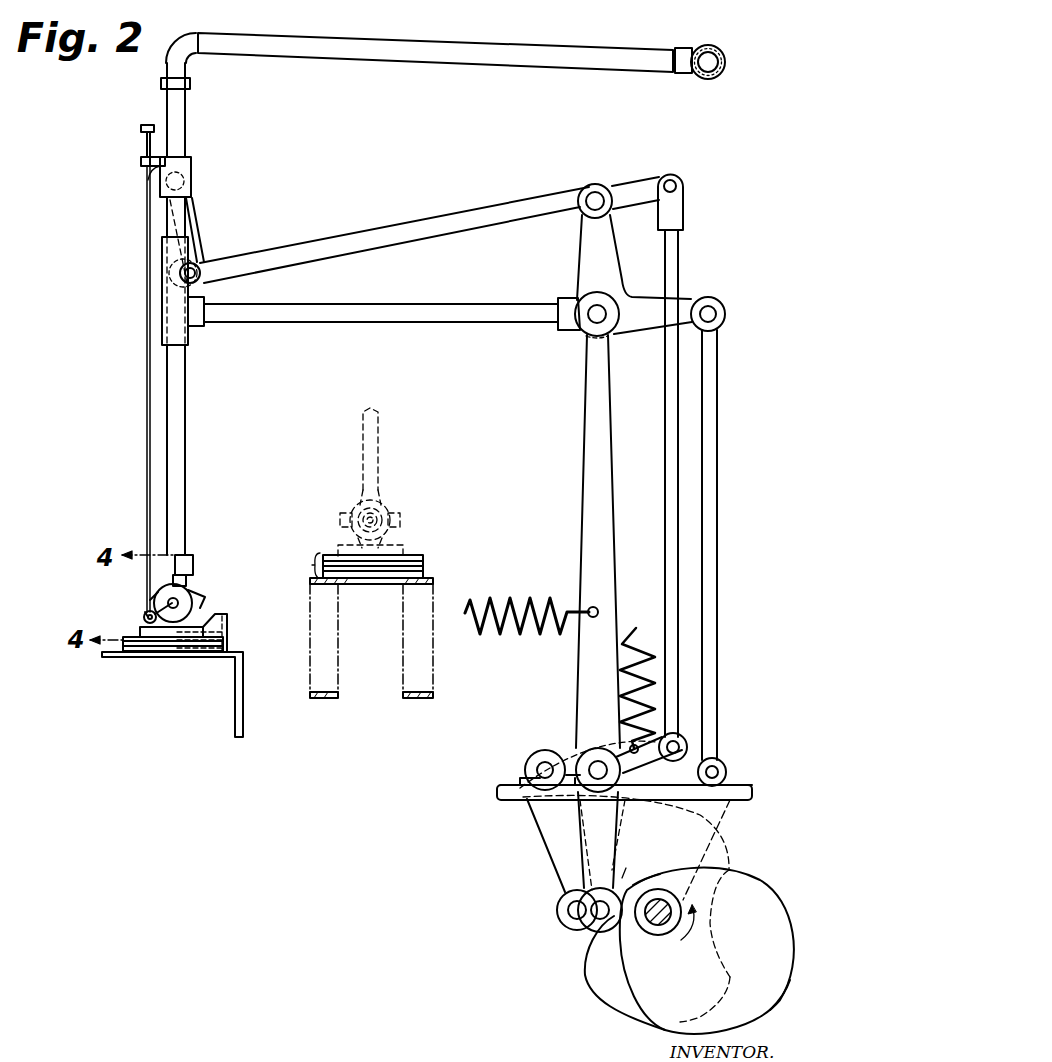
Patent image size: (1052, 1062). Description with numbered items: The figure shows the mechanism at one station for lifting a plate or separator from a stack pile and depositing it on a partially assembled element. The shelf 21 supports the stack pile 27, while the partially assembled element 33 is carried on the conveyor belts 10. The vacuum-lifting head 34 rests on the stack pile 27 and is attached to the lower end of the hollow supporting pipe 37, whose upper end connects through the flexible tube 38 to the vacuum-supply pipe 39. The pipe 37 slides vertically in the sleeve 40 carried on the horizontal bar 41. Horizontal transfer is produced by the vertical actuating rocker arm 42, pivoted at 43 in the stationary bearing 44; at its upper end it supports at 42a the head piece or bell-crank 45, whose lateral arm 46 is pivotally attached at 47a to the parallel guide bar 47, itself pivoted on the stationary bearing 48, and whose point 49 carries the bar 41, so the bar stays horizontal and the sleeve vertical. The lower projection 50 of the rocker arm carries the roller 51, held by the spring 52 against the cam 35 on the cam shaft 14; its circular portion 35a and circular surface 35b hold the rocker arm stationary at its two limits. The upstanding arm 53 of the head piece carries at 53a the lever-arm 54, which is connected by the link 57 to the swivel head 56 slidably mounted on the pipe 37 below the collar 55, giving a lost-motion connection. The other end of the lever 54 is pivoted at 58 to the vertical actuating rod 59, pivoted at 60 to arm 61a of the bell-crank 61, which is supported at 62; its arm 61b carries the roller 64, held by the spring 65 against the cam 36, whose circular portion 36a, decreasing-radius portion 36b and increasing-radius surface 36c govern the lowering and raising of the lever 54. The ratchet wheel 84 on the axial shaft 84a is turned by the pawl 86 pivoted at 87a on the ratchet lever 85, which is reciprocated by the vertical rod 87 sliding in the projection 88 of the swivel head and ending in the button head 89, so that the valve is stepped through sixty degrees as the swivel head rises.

The conveyor belts 10 is at (338, 584).
The cam shaft 14 is at (660, 925).
The shelf 21 is at (103, 655).
The stack pile 27 is at (153, 645).
The partially assembled element 33 is at (351, 565).
The vacuum-lifting head 34 is at (139, 630).
The cam 35 is at (657, 997).
The circular portion of cam 35 35a is at (640, 887).
The circular surface of cam 35 35b is at (759, 997).
The cam 36 is at (595, 1000).
The circular portion of cam 36 36a is at (662, 808).
The portion of cam 36 of decreasing radius 36b is at (742, 874).
The peripheral surface of cam 36 of increasing radius 36c is at (728, 958).
The hollow supporting pipe 37 is at (186, 490).
The flexible tube 38 is at (252, 50).
The vacuum-supply pipe 39 is at (702, 80).
The sleeve 40 is at (189, 338).
The horizontal bar 41 is at (346, 326).
The vertical actuating rocker arm 42 is at (584, 434).
The pivot 42a is at (577, 303).
The pivot 43 is at (601, 769).
The stationary bearing 44 is at (553, 799).
The head piece or bell-crank 45 is at (592, 312).
The lateral projection or arm 46 is at (694, 302).
The parallel guide bar 47 is at (718, 438).
The pivot 47a is at (716, 314).
The stationary bearing 48 is at (718, 771).
The attachment point 49 is at (560, 328).
The lower end or projection of rocker arm 50 is at (615, 872).
The roller 51 is at (592, 922).
The spring 52 is at (495, 600).
The upstanding arm or projection 53 is at (612, 246).
The pivot 53a is at (594, 193).
The lever-arm 54 is at (402, 228).
The collar 55 is at (186, 86).
The swivel head 56 is at (192, 165).
The link 57 is at (197, 226).
The pivot 58 is at (674, 185).
The vertical actuating rod 59 is at (664, 437).
The pivot 60 is at (678, 746).
The bell-crank 61 is at (562, 748).
The arm of bell-crank 61a is at (656, 759).
The arm of bell-crank 61b is at (550, 858).
The pivot 62 is at (541, 770).
The roller 64 is at (560, 919).
The spring 65 is at (633, 632).
The ratchet wheel 84 is at (188, 594).
The axial shaft 84a is at (179, 605).
The ratchet lever 85 is at (162, 613).
The pawl 86 is at (146, 612).
The vertical rod 87 is at (146, 340).
The pivot 87a is at (145, 615).
The projection 88 is at (141, 160).
The button head 89 is at (142, 126).